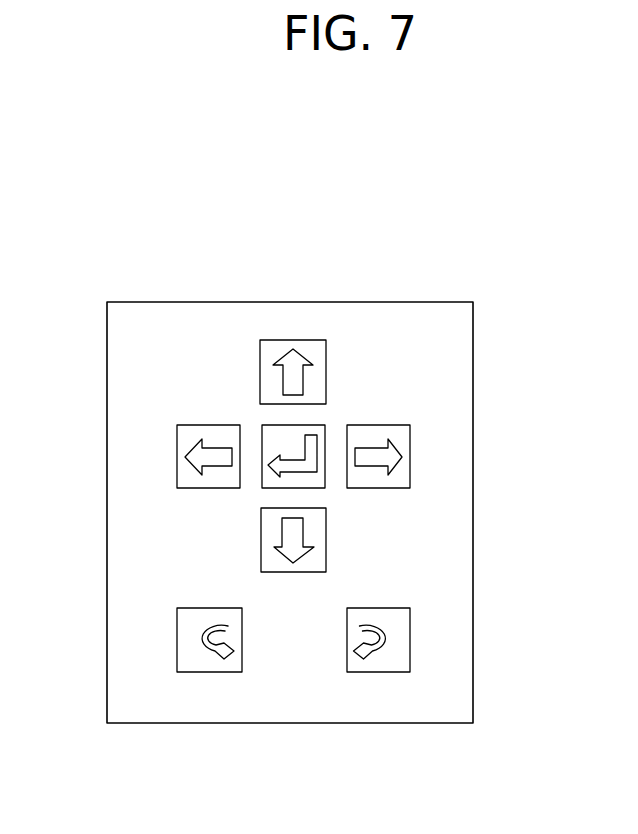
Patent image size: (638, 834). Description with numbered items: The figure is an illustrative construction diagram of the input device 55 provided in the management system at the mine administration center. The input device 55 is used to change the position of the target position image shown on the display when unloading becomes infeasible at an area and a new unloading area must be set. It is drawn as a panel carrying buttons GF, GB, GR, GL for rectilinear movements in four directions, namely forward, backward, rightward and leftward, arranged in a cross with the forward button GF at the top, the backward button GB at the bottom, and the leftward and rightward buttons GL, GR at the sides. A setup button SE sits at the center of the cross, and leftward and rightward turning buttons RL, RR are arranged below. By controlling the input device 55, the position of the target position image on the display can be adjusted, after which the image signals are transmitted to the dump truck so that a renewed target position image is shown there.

The input device 55 is at (204, 302).
The forward movement button GF is at (315, 340).
The leftward movement button GL is at (199, 425).
The rightward movement button GR is at (387, 425).
The backward movement button GB is at (326, 547).
The setup button SE is at (262, 489).
The leftward turning button RL is at (177, 652).
The rightward turning button RR is at (410, 652).